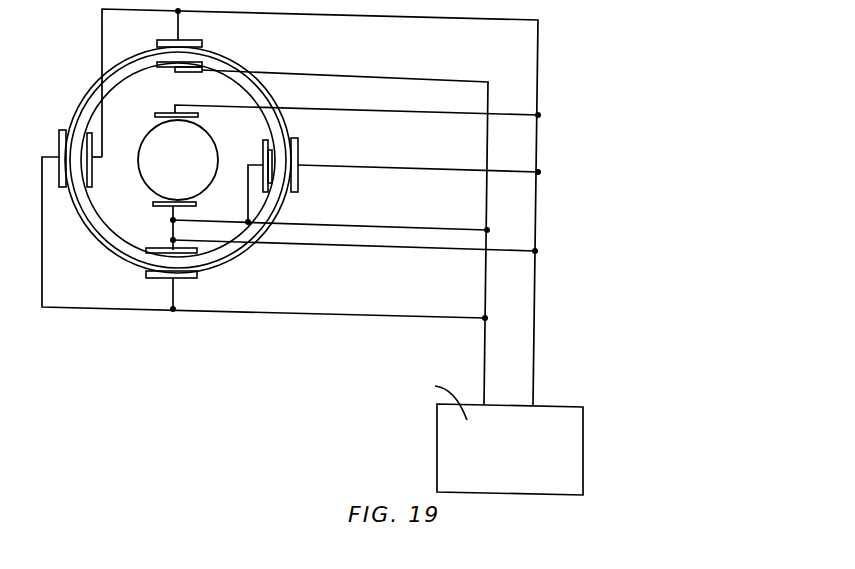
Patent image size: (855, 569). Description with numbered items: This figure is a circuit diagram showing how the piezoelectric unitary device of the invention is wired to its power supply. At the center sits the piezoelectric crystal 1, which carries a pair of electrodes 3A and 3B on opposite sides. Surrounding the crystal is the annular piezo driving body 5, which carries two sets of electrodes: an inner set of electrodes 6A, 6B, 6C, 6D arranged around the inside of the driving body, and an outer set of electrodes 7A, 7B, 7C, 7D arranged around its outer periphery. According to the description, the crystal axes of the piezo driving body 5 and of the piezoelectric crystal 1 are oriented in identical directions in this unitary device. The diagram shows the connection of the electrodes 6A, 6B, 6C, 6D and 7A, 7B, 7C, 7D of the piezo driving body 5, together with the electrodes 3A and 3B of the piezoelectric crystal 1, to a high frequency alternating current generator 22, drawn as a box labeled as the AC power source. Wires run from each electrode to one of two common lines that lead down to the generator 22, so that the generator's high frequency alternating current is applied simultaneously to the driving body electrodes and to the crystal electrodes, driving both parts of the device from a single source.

The piezoelectric crystal 1 is at (178, 160).
The electrode 3A is at (154, 115).
The electrode 3B is at (153, 204).
The piezo driving body 5 is at (82, 113).
The electrode 6A is at (164, 72).
The electrode 6B is at (266, 141).
The electrode 6C is at (172, 249).
The electrode 6D is at (106, 162).
The electrode 7A is at (199, 43).
The electrode 7B is at (298, 152).
The electrode 7C is at (191, 279).
The electrode 7D is at (59, 144).
The high frequency alternating current generator 22 is at (573, 475).